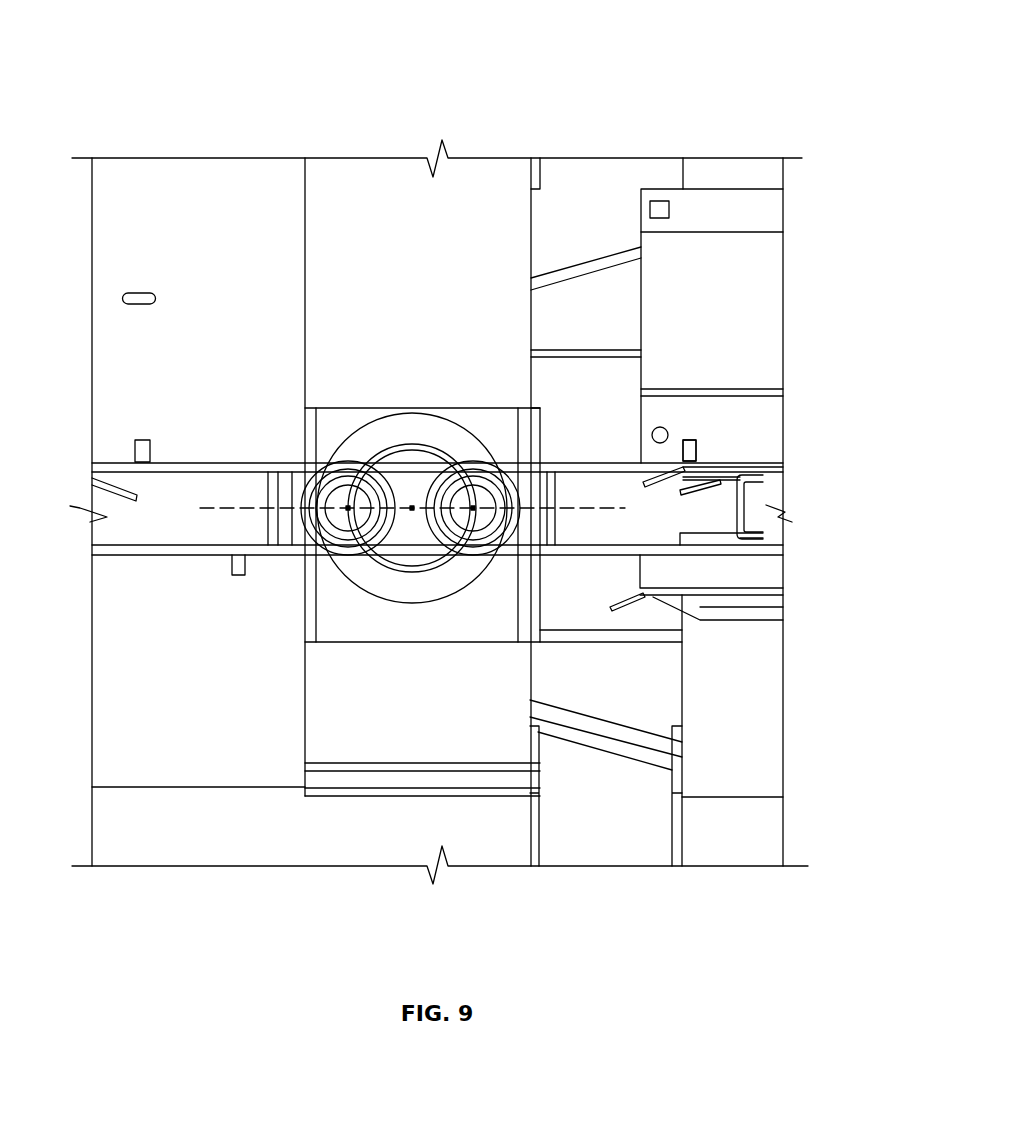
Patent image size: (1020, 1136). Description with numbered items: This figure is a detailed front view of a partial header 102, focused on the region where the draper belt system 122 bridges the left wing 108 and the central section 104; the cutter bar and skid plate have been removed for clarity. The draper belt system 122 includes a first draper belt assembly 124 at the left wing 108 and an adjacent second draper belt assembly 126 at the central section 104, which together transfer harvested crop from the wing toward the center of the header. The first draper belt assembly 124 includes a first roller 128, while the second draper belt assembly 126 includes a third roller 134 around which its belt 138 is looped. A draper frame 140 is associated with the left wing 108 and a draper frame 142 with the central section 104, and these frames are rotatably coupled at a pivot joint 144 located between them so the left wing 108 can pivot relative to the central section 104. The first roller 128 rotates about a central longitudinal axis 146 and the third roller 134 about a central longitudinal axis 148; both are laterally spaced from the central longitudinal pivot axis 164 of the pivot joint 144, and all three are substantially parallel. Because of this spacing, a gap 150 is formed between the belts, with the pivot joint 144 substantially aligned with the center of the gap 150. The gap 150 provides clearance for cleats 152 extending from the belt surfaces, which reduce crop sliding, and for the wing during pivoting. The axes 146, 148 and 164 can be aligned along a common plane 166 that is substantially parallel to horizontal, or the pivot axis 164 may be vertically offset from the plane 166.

The header 102 is at (632, 51).
The central section 104 is at (233, 147).
The left wing 108 is at (752, 146).
The draper belt system 122 is at (440, 379).
The first draper belt assembly 124 is at (690, 430).
The second draper belt assembly 126 is at (201, 432).
The first roller 128 is at (473, 485).
The third roller 134 is at (327, 513).
The belt 138 is at (133, 555).
The draper frame 140 is at (765, 257).
The draper frame 142 is at (145, 187).
The pivot joint 144 is at (382, 448).
The central longitudinal axis 146 is at (473, 508).
The central longitudinal axis 148 is at (348, 508).
The gap 150 is at (425, 544).
The cleats 152 is at (133, 448).
The central longitudinal pivot axis 164 is at (412, 510).
The plane 166 is at (237, 508).